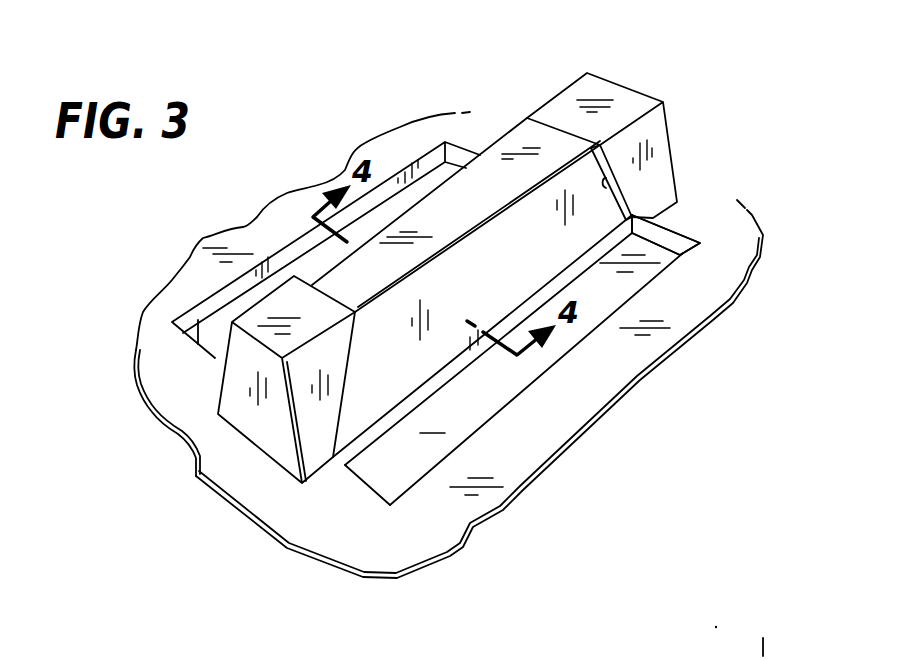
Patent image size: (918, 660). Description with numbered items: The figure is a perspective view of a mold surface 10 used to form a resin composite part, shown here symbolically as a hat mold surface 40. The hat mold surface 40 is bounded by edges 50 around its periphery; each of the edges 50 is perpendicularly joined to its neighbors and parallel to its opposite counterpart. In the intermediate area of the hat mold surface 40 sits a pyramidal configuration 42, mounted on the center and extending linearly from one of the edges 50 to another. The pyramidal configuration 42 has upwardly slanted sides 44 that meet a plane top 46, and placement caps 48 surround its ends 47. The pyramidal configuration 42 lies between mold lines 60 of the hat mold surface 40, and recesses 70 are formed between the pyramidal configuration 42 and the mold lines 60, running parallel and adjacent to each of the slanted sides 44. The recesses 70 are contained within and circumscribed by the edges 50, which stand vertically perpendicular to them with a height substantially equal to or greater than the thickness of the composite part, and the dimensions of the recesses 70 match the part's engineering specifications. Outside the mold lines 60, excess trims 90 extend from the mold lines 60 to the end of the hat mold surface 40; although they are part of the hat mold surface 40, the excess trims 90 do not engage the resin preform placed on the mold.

The mold surface 10 is at (700, 33).
The hat mold surface 40 is at (700, 95).
The pyramidal configuration 42 is at (505, 118).
The slanted sides 44 is at (578, 263).
The plane top 46 is at (347, 270).
The ends 47 is at (612, 184).
The placement caps 48 is at (233, 415).
The edges 50 is at (673, 247).
The mold lines 60 is at (250, 270).
The recesses 70 is at (490, 397).
The excess trims 90 is at (593, 392).